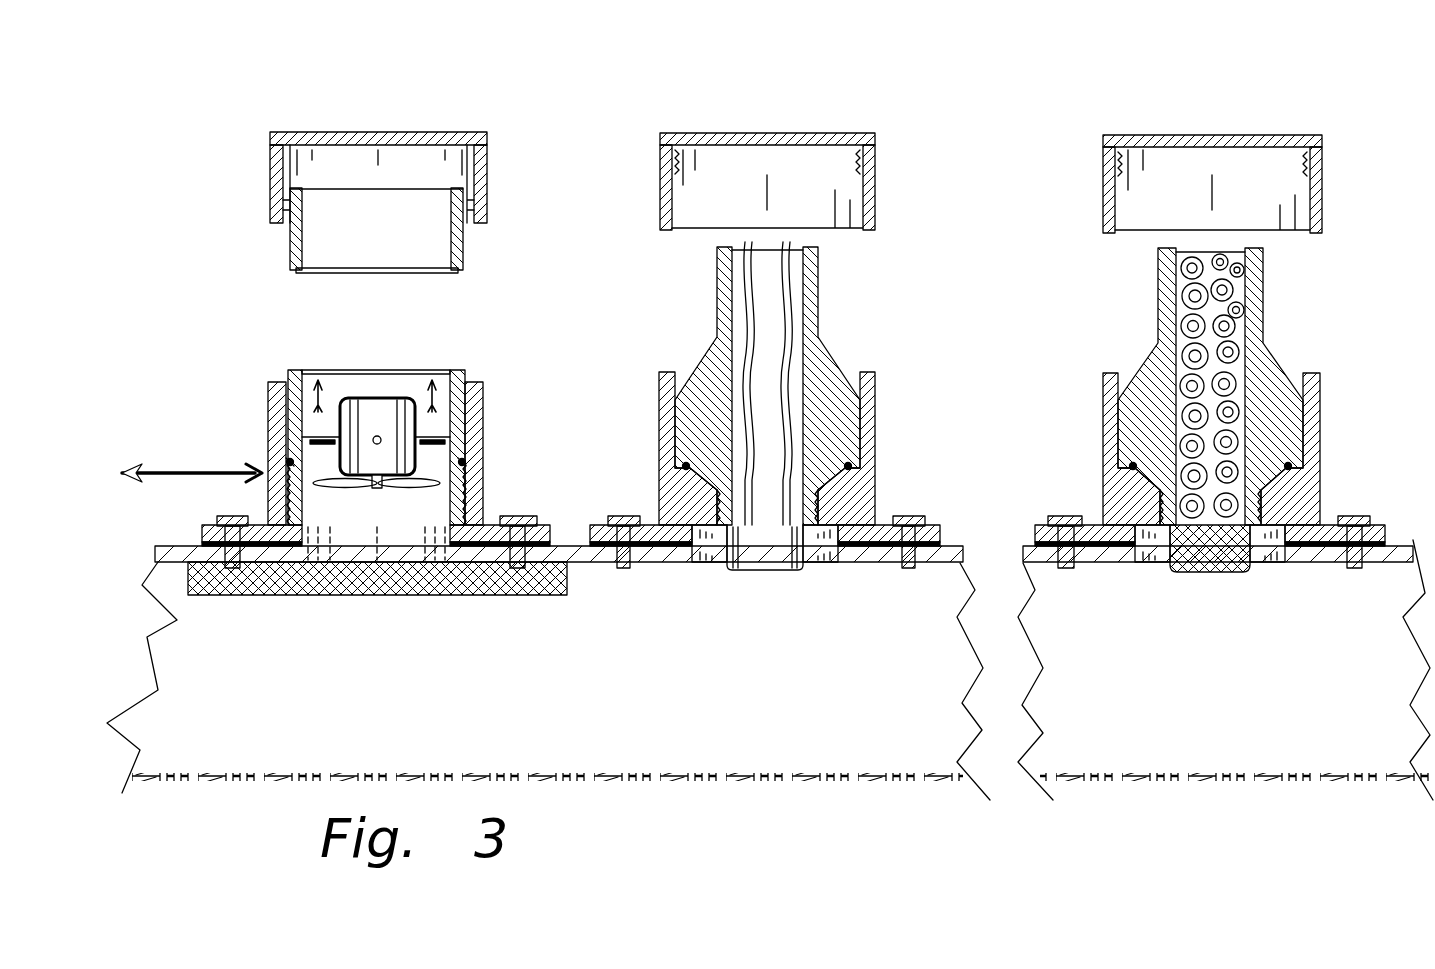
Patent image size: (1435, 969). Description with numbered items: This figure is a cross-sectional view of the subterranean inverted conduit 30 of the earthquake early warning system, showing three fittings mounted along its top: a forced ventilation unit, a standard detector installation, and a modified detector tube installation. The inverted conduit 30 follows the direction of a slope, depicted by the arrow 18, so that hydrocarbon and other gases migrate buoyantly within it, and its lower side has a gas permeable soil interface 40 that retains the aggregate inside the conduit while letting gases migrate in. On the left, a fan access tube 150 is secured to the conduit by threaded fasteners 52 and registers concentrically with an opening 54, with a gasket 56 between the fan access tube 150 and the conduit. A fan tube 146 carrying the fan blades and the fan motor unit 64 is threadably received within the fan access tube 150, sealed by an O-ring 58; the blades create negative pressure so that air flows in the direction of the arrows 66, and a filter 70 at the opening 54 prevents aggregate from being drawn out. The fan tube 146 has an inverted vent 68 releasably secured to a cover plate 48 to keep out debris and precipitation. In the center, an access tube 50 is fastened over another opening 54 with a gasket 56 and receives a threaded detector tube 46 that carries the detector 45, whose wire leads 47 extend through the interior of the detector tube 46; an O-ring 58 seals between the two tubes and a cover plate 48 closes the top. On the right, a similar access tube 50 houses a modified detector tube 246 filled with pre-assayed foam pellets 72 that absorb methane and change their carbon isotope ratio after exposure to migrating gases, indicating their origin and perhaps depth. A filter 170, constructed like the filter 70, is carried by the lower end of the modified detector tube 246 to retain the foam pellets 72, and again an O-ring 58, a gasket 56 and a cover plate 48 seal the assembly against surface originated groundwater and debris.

The arrow 18 is at (170, 470).
The inverted conduit 30 is at (563, 543).
The gas permeable soil interface 40 is at (413, 773).
The detector 45 is at (757, 565).
The detector tube 46 is at (818, 330).
The wire leads 47 is at (775, 307).
The cover plate 48 is at (487, 138).
The access tube 50 is at (875, 212).
The threaded fastener 52 is at (520, 517).
The opening 54 is at (420, 565).
The gasket 56 is at (203, 535).
The O-ring 58 is at (466, 462).
The fan motor unit 64 is at (400, 440).
The arrows 66 is at (430, 392).
The inverted vent 68 is at (480, 208).
The filter 70 is at (555, 592).
The foam pellets 72 is at (1232, 312).
The fan tube 146 is at (463, 248).
The fan access tube 150 is at (483, 402).
The filter 170 is at (1230, 570).
The modified detector tube 246 is at (1275, 356).